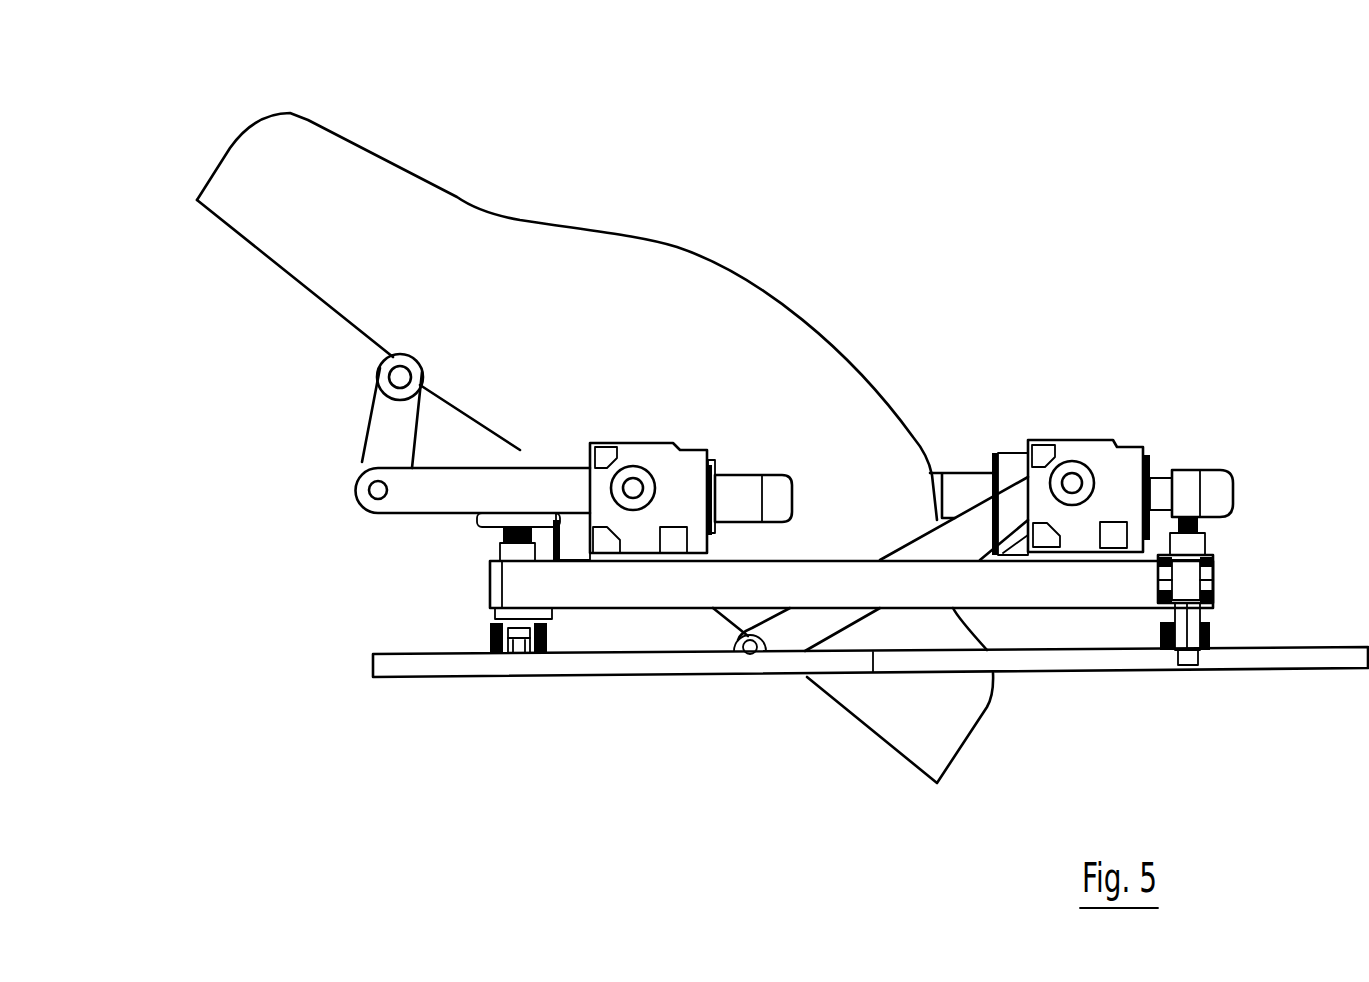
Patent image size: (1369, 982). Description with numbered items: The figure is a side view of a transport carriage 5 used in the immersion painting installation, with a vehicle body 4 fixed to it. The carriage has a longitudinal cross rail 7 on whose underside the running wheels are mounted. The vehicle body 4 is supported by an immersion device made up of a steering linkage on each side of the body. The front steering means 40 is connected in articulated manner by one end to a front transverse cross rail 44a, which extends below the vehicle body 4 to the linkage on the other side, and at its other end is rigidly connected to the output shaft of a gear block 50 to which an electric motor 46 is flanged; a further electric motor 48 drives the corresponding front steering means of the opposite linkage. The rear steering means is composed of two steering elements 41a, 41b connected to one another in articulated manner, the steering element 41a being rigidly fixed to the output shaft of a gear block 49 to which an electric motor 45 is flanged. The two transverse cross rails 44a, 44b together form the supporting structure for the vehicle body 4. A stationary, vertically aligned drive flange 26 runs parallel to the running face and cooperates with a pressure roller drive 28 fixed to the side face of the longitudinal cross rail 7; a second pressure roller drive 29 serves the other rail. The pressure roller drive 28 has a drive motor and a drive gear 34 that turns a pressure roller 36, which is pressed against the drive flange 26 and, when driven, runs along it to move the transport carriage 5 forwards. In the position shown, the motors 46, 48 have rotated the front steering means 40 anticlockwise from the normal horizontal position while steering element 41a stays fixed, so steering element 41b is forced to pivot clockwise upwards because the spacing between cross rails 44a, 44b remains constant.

The vehicle body 4 is at (662, 290).
The transport carriage 5 is at (1008, 592).
The longitudinal cross rail 7 is at (607, 583).
The drive flange 26 is at (1240, 655).
The pressure roller drive 28 is at (1232, 545).
The pressure roller drive 29 is at (484, 549).
The drive gear 34 is at (1214, 597).
The pressure roller 36 is at (1190, 655).
The front steering means 40 is at (795, 622).
The steering element 41a is at (482, 485).
The steering element 41b is at (383, 445).
The front transverse cross rail 44a is at (750, 655).
The transverse cross rail 44b is at (398, 377).
The electric motor 45 is at (732, 497).
The electric motor 46 is at (1213, 497).
The electric motor 48 is at (958, 483).
The gear block 49 is at (628, 467).
The gear block 50 is at (1100, 457).